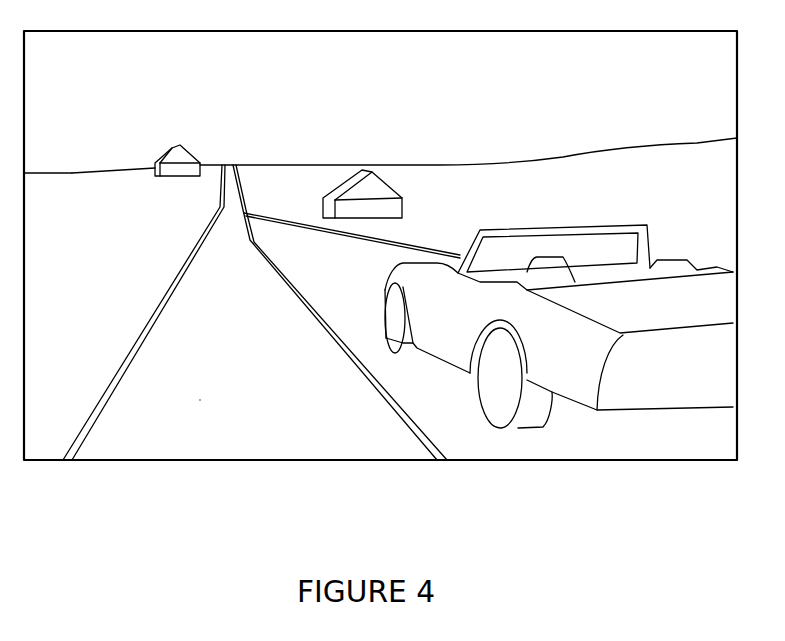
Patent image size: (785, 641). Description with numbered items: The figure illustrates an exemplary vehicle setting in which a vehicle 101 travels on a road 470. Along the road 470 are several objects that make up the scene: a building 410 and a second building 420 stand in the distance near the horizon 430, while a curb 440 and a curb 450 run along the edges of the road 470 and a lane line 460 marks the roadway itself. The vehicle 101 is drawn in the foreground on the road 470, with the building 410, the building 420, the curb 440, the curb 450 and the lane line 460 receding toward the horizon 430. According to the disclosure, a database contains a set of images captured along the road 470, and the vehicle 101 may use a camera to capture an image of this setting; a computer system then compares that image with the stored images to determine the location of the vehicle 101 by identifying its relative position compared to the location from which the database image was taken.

The vehicle 101 is at (547, 224).
The building 410 is at (187, 155).
The building 420 is at (375, 172).
The horizon 430 is at (563, 155).
The curb 440 is at (181, 270).
The curb 450 is at (262, 213).
The lane line 460 is at (355, 362).
The road 470 is at (242, 413).